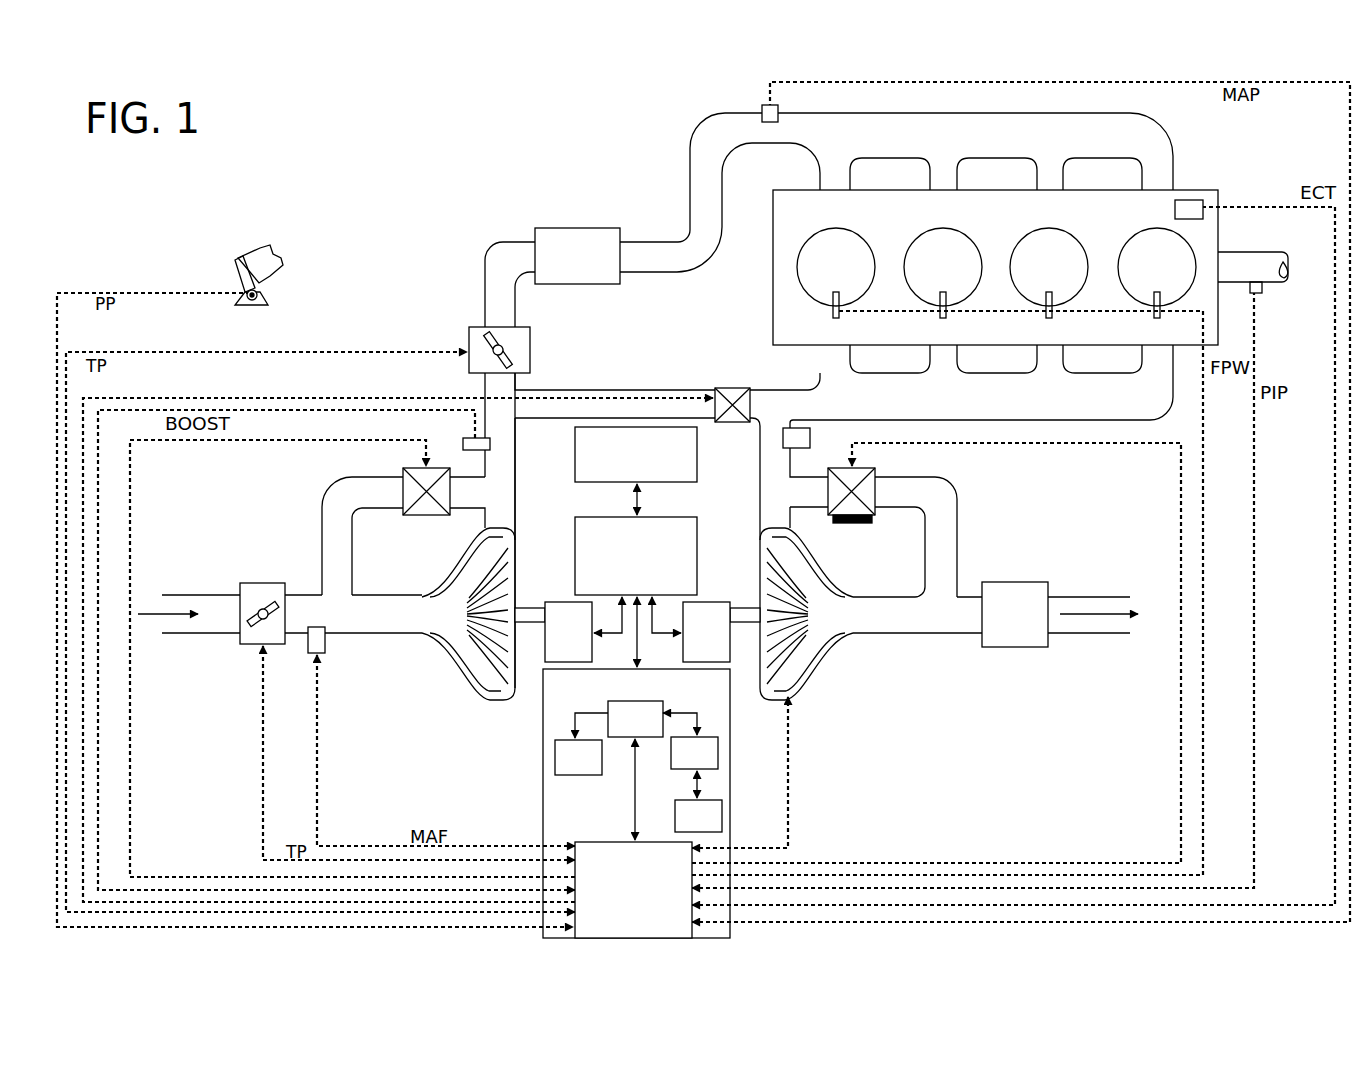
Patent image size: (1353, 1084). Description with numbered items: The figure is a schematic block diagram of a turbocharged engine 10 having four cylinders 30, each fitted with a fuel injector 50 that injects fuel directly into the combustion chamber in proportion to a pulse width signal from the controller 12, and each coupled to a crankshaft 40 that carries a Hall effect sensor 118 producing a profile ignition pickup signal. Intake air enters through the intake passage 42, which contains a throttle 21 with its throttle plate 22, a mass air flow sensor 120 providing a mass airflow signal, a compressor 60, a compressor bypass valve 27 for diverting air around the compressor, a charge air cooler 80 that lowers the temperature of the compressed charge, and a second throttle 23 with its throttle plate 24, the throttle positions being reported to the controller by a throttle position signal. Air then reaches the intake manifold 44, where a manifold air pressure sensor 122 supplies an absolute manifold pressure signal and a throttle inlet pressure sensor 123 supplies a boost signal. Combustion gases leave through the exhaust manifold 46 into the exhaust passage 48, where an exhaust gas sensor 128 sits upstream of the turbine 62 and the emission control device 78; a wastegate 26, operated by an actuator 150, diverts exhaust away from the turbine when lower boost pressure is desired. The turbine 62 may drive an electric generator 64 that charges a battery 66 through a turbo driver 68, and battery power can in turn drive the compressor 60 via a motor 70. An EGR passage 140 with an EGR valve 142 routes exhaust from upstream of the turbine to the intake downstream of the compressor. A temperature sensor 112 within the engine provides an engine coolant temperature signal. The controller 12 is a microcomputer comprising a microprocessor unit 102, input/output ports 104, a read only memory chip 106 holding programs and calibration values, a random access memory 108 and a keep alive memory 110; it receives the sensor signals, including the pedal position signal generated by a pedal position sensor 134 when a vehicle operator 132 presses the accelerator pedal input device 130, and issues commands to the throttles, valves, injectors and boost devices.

The engine 10 is at (995, 267).
The controller 12 is at (636, 803).
The throttle 21 is at (256, 583).
The throttle plate 22 is at (270, 600).
The throttle 23 is at (483, 326).
The throttle plate 24 is at (512, 366).
The wastegate 26 is at (880, 478).
The compressor bypass valve 27 is at (404, 478).
The cylinder 30 is at (996, 267).
The crankshaft 40 is at (1262, 252).
The intake passage 42 is at (280, 614).
The intake manifold 44 is at (896, 192).
The exhaust manifold 46 is at (981, 386).
The exhaust passage 48 is at (995, 615).
The fuel injector 50 is at (833, 314).
The compressor 60 is at (475, 655).
The turbine 62 is at (805, 565).
The electric generator 64 is at (706, 632).
The battery 66 is at (698, 465).
The turbo driver 68 is at (680, 517).
The motor 70 is at (568, 632).
The emission control device 78 is at (1015, 614).
The charge air cooler 80 is at (544, 228).
The microprocessor unit 102 is at (606, 713).
The input/output ports 104 is at (633, 890).
The read only memory chip 106 is at (555, 766).
The random access memory 108 is at (718, 742).
The keep alive memory 110 is at (722, 803).
The temperature sensor 112 is at (1196, 200).
The Hall effect sensor 118 is at (1262, 295).
The mass air flow sensor 120 is at (325, 641).
The manifold air pressure sensor 122 is at (762, 108).
The throttle inlet pressure sensor 123 is at (465, 447).
The exhaust gas sensor 128 is at (810, 437).
The input device 130 is at (240, 272).
The vehicle operator 132 is at (283, 258).
The pedal position sensor 134 is at (262, 294).
The EGR passage 140 is at (620, 390).
The EGR valve 142 is at (738, 388).
The actuator 150 is at (862, 524).